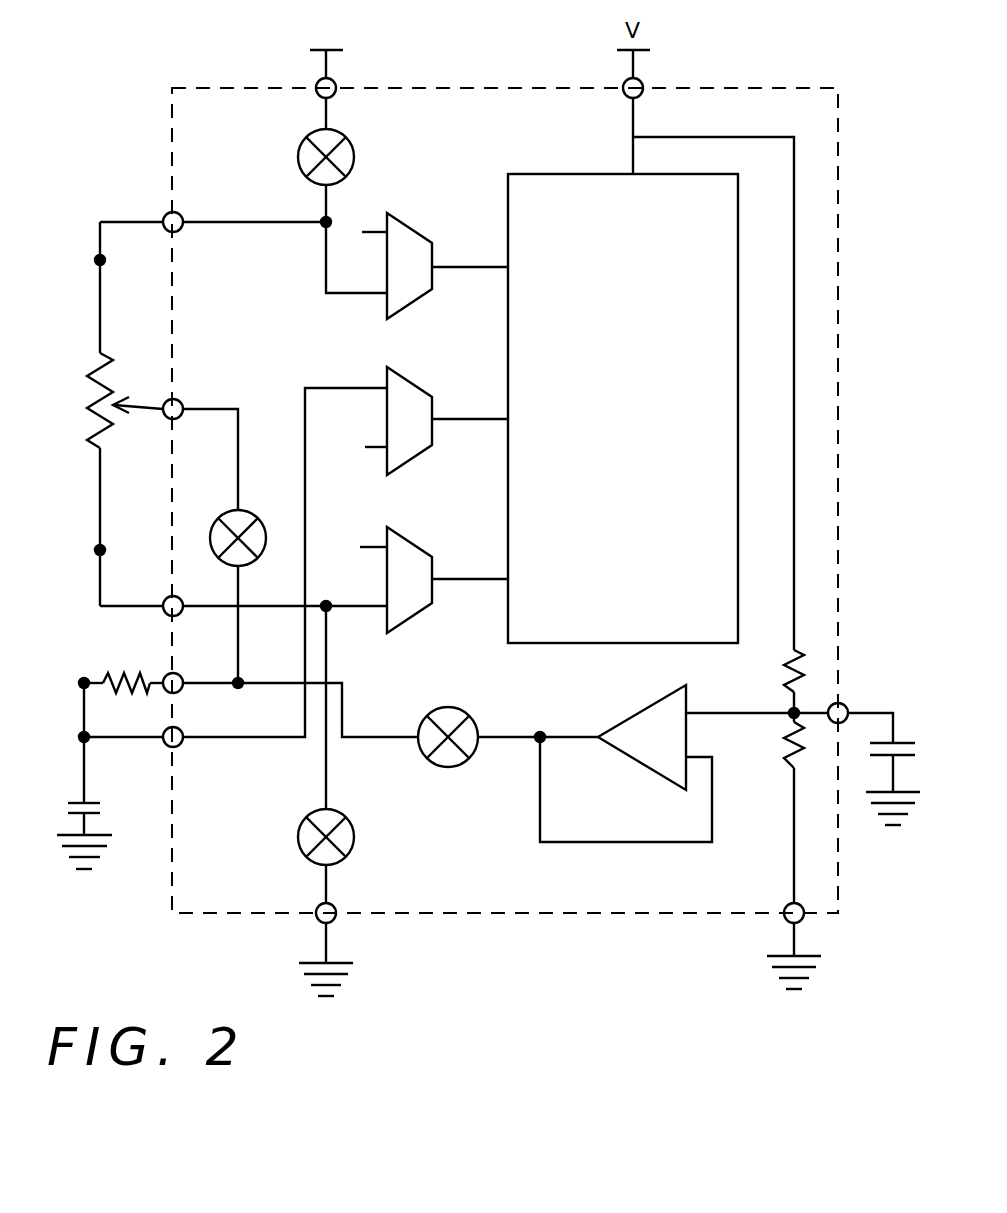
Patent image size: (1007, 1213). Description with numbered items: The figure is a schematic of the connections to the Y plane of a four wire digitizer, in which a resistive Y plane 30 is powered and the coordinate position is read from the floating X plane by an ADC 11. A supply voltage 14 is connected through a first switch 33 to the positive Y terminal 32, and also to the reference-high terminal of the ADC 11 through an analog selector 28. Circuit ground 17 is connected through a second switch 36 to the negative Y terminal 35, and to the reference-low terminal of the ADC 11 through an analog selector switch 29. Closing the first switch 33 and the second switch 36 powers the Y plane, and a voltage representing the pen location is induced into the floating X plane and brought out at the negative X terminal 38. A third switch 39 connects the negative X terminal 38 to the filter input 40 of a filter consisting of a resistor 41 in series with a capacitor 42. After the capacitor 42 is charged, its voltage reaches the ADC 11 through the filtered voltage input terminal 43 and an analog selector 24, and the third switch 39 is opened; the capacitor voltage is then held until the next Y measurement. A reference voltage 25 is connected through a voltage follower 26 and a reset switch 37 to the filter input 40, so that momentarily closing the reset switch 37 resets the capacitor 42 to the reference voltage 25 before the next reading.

The ADC 11 is at (738, 290).
The voltage V 14 is at (310, 43).
The circuit ground 17 is at (320, 918).
The analog selector 24 is at (398, 387).
The reference voltage Vref 25 is at (870, 690).
The voltage follower 26 is at (680, 775).
The analog selector 28 is at (398, 243).
The analog selector switch 29 is at (408, 550).
The resistive Y plane Dy 30 is at (95, 370).
The Y+ terminal 32 is at (163, 218).
The switch SAy 33 is at (298, 157).
The Y− terminal 35 is at (168, 598).
The switch SCy 36 is at (300, 837).
The switch SDy 37 is at (442, 717).
The X− terminal 38 is at (183, 402).
The switch SBy 39 is at (245, 520).
The filter input Fy 40 is at (183, 682).
The resistor Ry 41 is at (103, 678).
The capacitor Cy 42 is at (72, 805).
The filtered voltage input terminal INy 43 is at (165, 750).